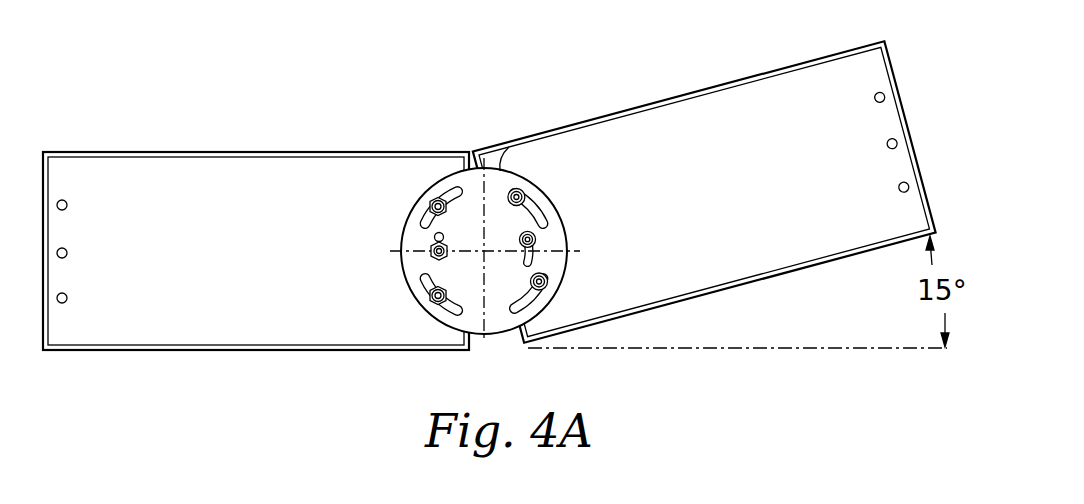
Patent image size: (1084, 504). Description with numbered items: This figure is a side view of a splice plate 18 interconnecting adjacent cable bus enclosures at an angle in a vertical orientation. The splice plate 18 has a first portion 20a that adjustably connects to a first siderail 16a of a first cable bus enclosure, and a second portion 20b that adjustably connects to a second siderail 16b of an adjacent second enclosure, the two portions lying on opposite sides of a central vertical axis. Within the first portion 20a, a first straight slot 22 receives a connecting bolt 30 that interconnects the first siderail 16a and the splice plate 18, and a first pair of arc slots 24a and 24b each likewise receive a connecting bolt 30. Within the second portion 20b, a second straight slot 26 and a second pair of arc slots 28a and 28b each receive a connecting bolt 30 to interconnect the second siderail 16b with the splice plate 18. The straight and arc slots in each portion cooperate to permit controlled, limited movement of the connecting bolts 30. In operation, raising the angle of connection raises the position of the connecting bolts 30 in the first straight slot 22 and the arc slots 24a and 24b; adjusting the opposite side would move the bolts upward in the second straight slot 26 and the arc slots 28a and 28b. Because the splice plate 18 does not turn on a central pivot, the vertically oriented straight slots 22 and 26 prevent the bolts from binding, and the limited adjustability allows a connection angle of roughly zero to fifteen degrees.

The first siderail 16a is at (850, 220).
The second siderail 16b is at (112, 307).
The splice plate 18 is at (522, 142).
The first portion 20a is at (535, 312).
The second portion 20b is at (444, 316).
The first straight slot 22 is at (530, 254).
The arc slot 24a is at (528, 207).
The arc slot 24b is at (521, 307).
The second straight slot 26 is at (433, 237).
The arc slot 28a is at (423, 221).
The arc slot 28b is at (425, 278).
The connecting bolt 30 is at (526, 260).